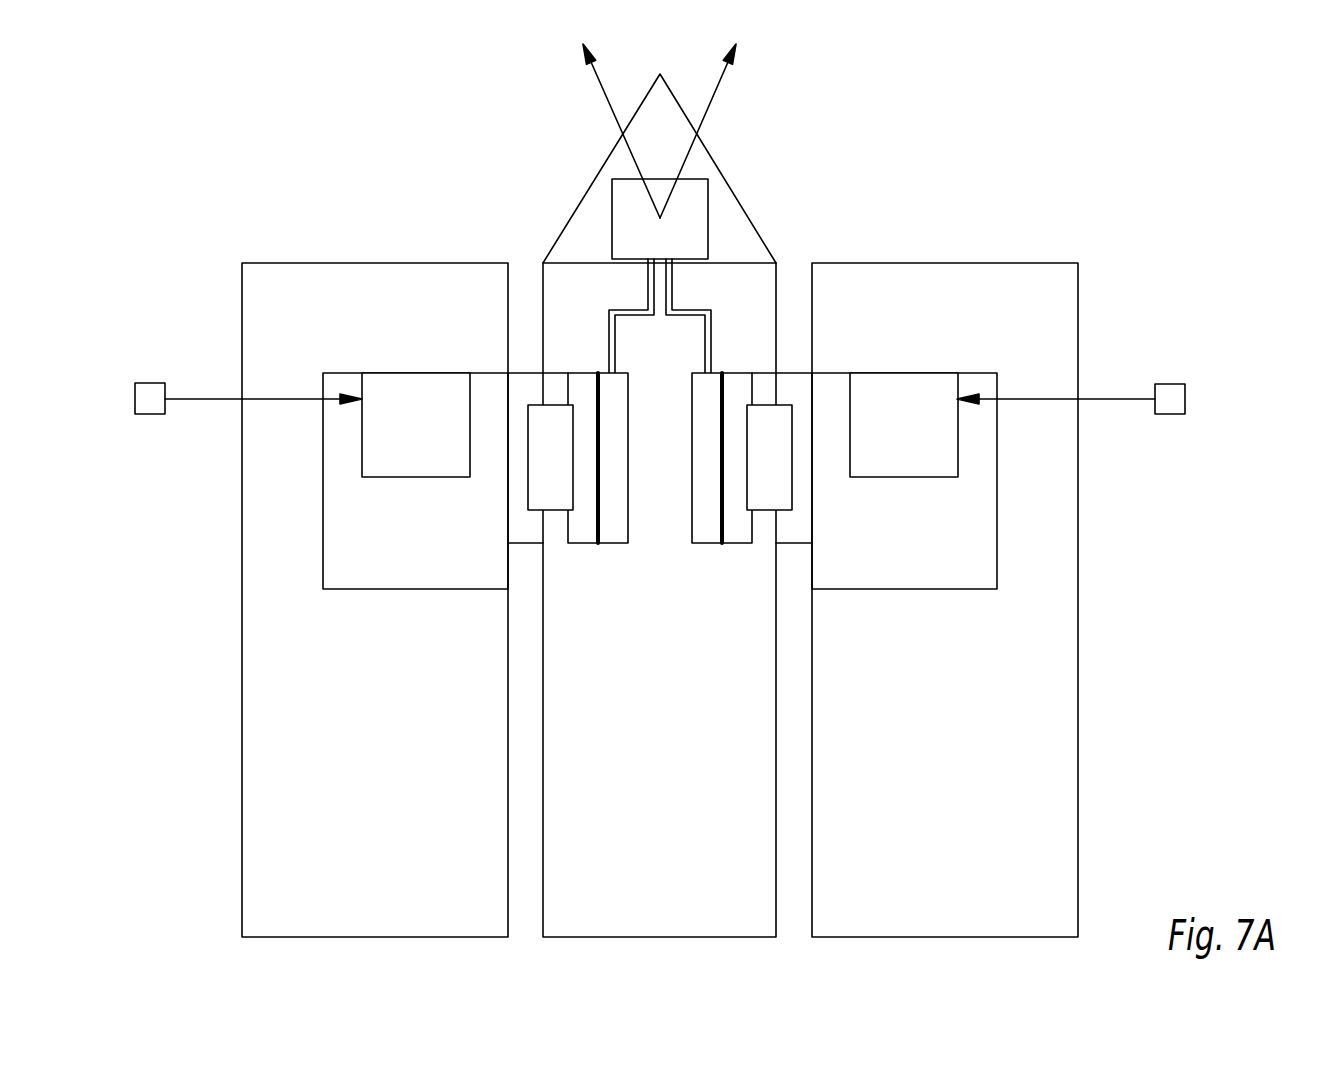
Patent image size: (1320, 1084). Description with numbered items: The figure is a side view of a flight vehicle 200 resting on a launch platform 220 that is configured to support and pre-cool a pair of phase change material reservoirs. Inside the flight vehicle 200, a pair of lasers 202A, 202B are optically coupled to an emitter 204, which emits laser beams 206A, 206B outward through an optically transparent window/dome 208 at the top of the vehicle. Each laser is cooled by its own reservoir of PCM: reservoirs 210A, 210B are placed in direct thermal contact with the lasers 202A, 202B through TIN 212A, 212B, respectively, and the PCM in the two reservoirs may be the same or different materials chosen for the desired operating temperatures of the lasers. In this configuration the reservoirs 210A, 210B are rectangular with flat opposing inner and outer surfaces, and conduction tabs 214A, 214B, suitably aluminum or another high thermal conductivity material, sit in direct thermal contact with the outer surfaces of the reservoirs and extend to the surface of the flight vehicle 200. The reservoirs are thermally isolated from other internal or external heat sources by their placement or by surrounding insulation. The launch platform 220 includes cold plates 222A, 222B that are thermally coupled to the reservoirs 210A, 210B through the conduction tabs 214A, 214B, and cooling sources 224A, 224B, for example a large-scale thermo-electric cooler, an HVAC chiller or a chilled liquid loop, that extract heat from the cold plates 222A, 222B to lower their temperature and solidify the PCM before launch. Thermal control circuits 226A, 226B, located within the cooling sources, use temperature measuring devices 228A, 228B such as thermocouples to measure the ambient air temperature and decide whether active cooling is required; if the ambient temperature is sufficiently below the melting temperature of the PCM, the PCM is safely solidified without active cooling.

The flight vehicle 200 is at (1180, 95).
The laser 202A is at (619, 496).
The laser 202B is at (701, 496).
The emitter 204 is at (620, 199).
The laser beam 206A is at (584, 54).
The laser beam 206B is at (735, 54).
The optically transparent window/dome 208 is at (607, 157).
The reservoir of PCM 210A is at (585, 540).
The reservoir of PCM 210B is at (734, 540).
The TIN 212A is at (600, 425).
The TIN 212B is at (722, 457).
The conduction tab 214A is at (533, 501).
The conduction tab 214B is at (780, 500).
The launch platform 220 is at (945, 263).
The cold plate 222A is at (525, 372).
The cold plate 222B is at (795, 372).
The cooling source 224A is at (327, 477).
The cooling source 224B is at (993, 477).
The thermal control circuits 226A is at (368, 428).
The thermal control circuits 226B is at (948, 430).
The temperature measuring device 228A is at (149, 383).
The temperature measuring device 228B is at (1170, 384).